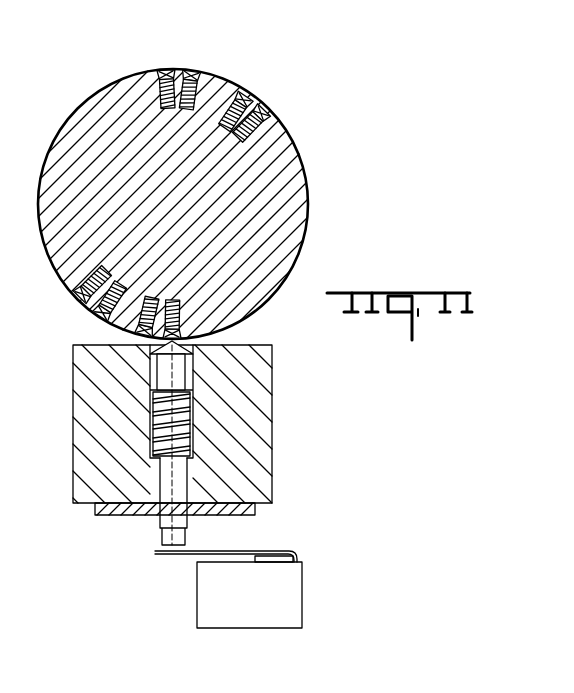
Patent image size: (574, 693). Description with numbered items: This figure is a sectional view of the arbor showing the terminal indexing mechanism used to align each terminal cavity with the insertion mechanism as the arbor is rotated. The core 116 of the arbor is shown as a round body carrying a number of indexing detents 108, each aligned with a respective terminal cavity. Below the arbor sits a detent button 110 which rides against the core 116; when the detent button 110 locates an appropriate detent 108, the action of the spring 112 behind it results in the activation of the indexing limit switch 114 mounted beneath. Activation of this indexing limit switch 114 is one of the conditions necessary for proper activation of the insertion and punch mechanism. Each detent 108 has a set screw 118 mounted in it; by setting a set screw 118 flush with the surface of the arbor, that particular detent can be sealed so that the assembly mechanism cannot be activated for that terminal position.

The indexing detents 108 is at (166, 70).
The detent button 110 is at (175, 352).
The spring 112 is at (194, 419).
The indexing limit switch 114 is at (290, 602).
The core 116 is at (296, 203).
The set screw 118 is at (160, 97).